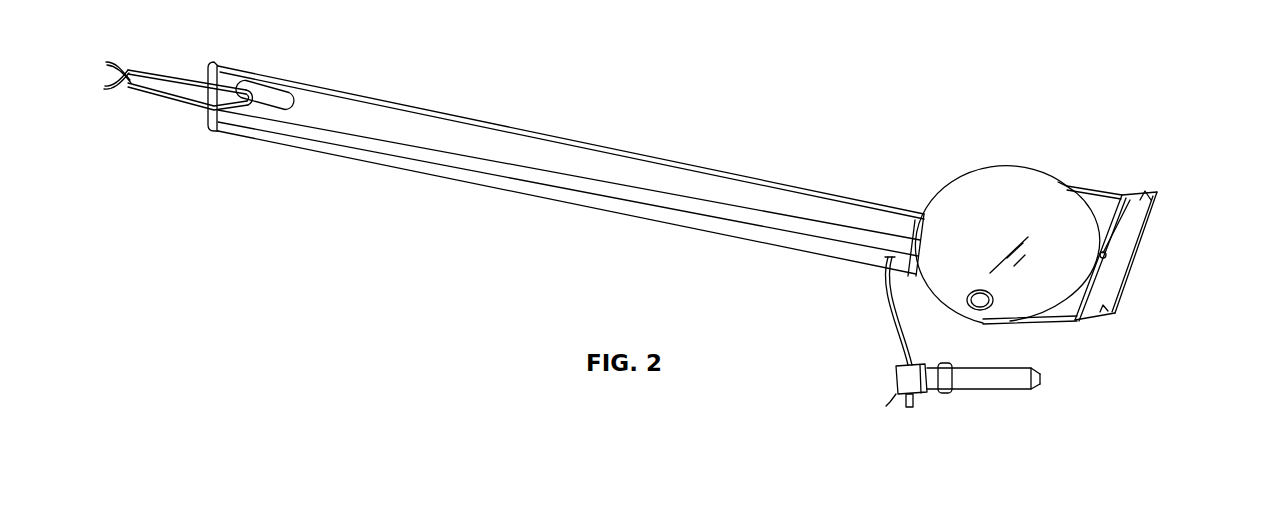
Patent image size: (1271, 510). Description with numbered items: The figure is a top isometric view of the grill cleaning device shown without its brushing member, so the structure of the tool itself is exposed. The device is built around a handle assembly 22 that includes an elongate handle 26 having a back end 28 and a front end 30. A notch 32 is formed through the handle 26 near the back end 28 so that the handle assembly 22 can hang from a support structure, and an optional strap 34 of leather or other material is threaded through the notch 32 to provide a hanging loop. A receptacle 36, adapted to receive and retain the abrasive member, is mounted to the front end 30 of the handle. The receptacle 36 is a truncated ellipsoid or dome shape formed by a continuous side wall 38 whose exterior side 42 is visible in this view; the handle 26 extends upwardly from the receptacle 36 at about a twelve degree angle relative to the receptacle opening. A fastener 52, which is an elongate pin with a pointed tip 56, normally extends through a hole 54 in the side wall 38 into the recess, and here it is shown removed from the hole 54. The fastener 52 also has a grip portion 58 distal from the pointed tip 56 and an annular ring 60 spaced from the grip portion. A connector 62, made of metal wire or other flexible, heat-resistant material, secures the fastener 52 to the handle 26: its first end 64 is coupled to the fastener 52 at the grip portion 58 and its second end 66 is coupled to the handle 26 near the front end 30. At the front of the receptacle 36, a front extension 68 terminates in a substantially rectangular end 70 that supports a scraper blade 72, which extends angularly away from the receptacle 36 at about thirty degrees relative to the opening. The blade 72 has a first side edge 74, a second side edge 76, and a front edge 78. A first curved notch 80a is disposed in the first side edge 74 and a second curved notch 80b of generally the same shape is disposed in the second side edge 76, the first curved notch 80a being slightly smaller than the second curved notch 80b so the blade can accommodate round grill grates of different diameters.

The handle assembly 22 is at (397, 97).
The handle 26 is at (533, 138).
The back end 28 is at (207, 120).
The front end 30 is at (920, 234).
The notch 32 is at (263, 85).
The strap 34 is at (162, 72).
The receptacle 36 is at (977, 179).
The side wall 38 is at (1010, 178).
The exterior side 42 is at (1018, 222).
The fastener 52 is at (888, 404).
The hole 54 is at (970, 310).
The pointed tip 56 is at (1036, 385).
The grip portion 58 is at (898, 380).
The annular ring 60 is at (946, 395).
The connector 62 is at (890, 318).
The first end 64 is at (910, 408).
The second end 66 is at (880, 258).
The front extension 68 is at (1080, 187).
The rectangular end 70 is at (1100, 253).
The scraper blade 72 is at (1138, 222).
The first side edge 74 is at (1093, 320).
The second side edge 76 is at (1125, 200).
The front edge 78 is at (1137, 250).
The first curved notch 80a is at (1107, 310).
The second curved notch 80b is at (1147, 197).